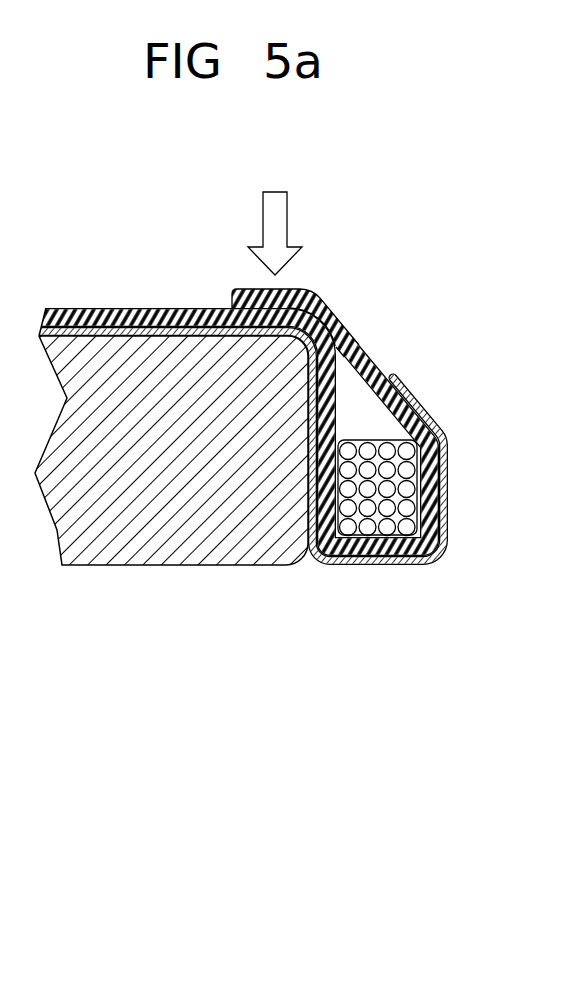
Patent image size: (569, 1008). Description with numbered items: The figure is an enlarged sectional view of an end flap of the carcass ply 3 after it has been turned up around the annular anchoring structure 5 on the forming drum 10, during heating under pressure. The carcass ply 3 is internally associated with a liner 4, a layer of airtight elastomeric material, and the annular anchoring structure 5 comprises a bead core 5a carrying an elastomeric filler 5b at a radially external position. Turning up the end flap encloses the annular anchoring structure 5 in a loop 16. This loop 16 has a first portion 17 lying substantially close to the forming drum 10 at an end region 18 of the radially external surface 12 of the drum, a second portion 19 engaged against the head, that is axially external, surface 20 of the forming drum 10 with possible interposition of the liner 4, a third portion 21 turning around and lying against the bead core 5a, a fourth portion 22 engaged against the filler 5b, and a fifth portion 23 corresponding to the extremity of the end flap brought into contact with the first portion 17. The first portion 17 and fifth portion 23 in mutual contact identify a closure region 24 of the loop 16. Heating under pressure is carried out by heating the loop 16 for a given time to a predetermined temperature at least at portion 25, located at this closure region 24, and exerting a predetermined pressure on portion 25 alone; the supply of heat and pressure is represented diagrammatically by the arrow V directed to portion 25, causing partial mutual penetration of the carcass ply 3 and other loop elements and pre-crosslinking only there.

The carcass ply 3 is at (74, 304).
The liner 4 is at (313, 556).
The annular anchoring structure 5 is at (376, 423).
The bead core 5a is at (356, 516).
The elastomeric filler 5b is at (347, 390).
The forming drum 10 is at (118, 590).
The radially external surface 12 is at (117, 336).
The loop 16 is at (442, 551).
The first portion 17 is at (212, 322).
The end region 18 is at (316, 292).
The second portion 19 is at (332, 467).
The head surface 20 is at (313, 412).
The third portion 21 is at (433, 511).
The fourth portion 22 is at (357, 337).
The fifth portion 23 is at (243, 288).
The closure region 24 is at (340, 280).
The portion submitted to localised pre-vulcanisation 25 is at (285, 290).
The arrow representing supply of heat and pressure V is at (275, 207).